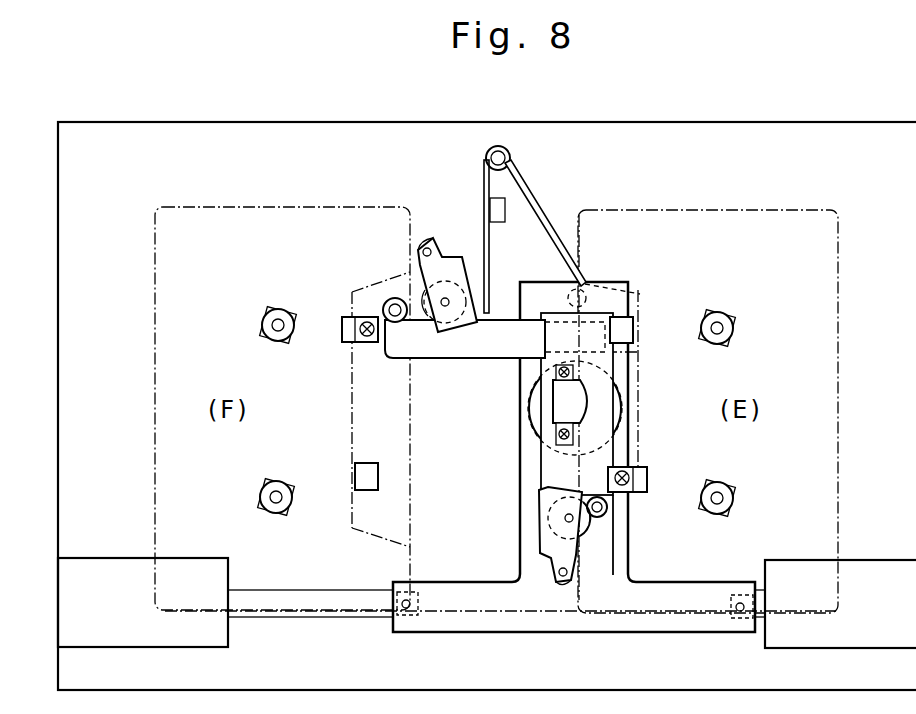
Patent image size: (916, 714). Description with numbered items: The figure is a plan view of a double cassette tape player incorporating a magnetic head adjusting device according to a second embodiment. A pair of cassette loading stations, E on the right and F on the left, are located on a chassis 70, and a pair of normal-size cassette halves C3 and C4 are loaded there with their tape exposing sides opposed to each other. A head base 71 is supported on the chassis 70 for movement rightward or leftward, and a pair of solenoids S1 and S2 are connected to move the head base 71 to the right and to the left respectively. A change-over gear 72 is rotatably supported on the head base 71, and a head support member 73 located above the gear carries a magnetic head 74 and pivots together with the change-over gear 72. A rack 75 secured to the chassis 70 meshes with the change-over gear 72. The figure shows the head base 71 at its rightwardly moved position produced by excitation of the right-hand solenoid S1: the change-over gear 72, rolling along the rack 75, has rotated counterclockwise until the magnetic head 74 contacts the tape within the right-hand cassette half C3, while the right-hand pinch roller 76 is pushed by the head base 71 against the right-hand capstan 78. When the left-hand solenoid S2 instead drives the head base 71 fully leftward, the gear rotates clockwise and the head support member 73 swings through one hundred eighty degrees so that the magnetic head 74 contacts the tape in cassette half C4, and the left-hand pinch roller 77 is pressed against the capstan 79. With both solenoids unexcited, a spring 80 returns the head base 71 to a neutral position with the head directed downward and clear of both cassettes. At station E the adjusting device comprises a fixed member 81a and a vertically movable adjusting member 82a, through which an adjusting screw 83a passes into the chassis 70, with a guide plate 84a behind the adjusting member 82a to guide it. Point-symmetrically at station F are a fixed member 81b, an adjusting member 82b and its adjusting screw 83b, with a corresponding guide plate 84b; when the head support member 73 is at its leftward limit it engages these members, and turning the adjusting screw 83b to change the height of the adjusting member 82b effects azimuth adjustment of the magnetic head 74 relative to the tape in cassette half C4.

The chassis 70 is at (270, 142).
The head base 71 is at (500, 622).
The change-over gear 72 is at (530, 400).
The head support member 73 is at (541, 474).
The magnetic head 74 is at (588, 402).
The rack 75 is at (450, 342).
The right-hand side pinch roller 76 is at (546, 548).
The left-hand side pinch roller 77 is at (448, 268).
The right-hand side capstan 78 is at (602, 520).
The capstan 79 is at (394, 300).
The spring 80 is at (552, 220).
The fixed member 81a is at (626, 332).
The fixed member 81b is at (362, 486).
The adjusting member 82a is at (630, 468).
The adjusting member 82b is at (372, 343).
The adjusting screw 83a is at (612, 500).
The adjusting screw 83b is at (360, 320).
The guide plate 84a is at (644, 480).
The screw 84b is at (346, 336).
The solenoid S1 is at (884, 642).
The solenoid S2 is at (168, 630).
The cassette half C3 is at (838, 444).
The cassette half C4 is at (158, 436).